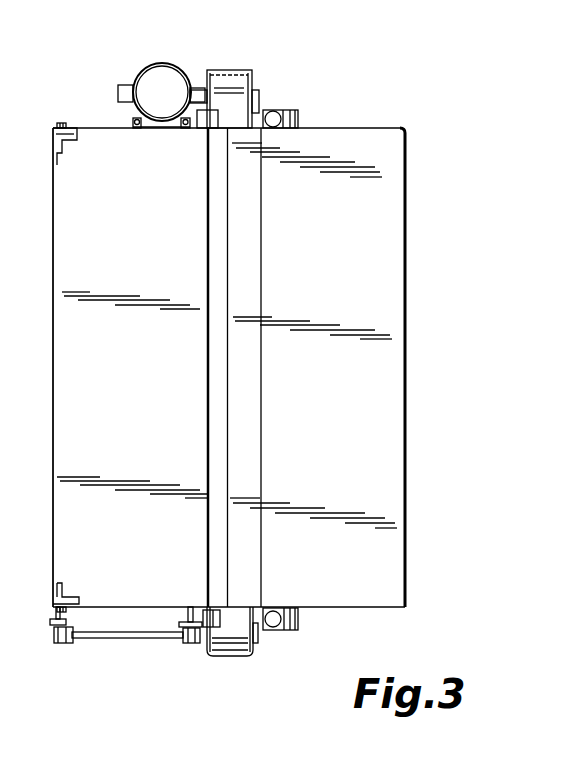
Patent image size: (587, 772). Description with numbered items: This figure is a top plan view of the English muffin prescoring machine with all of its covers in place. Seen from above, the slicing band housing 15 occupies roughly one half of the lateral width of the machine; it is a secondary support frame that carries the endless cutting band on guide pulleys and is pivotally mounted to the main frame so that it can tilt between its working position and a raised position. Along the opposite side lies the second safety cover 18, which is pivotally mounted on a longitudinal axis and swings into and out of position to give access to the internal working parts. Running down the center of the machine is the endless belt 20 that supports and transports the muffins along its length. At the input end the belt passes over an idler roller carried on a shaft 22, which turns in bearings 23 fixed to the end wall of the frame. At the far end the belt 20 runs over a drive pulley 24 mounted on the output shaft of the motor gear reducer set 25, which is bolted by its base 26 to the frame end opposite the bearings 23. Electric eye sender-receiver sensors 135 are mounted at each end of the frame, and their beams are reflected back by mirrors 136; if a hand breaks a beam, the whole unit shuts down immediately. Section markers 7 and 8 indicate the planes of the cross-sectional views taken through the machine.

The section line 7- 7 is at (183, 157).
The section line 8- 8 is at (232, 62).
The slicing band housing 15 is at (392, 332).
The second safety cover 18 is at (70, 373).
The endless belt 20 is at (230, 72).
The shaft 22 is at (113, 639).
The bearings 23 is at (57, 645).
The drive pulley 24 is at (259, 95).
The motor gear reducer set 25 is at (155, 77).
The base 26 is at (138, 122).
The electric eye sender-receiver sensors 135 is at (300, 118).
The mirrors 136 is at (212, 615).